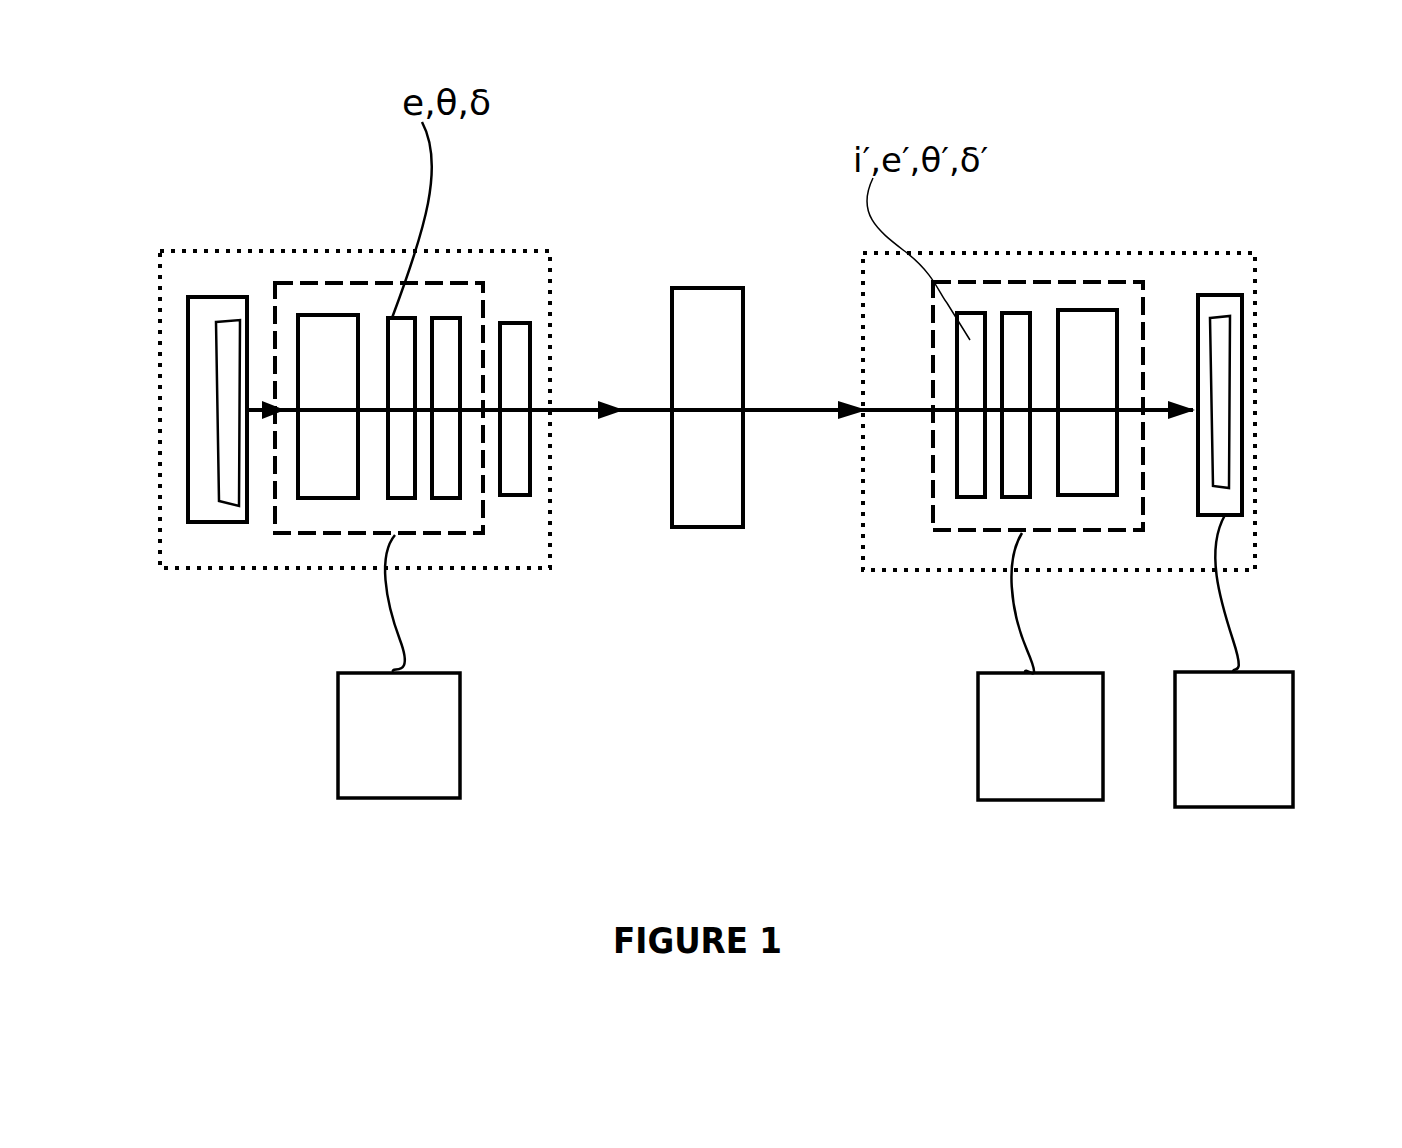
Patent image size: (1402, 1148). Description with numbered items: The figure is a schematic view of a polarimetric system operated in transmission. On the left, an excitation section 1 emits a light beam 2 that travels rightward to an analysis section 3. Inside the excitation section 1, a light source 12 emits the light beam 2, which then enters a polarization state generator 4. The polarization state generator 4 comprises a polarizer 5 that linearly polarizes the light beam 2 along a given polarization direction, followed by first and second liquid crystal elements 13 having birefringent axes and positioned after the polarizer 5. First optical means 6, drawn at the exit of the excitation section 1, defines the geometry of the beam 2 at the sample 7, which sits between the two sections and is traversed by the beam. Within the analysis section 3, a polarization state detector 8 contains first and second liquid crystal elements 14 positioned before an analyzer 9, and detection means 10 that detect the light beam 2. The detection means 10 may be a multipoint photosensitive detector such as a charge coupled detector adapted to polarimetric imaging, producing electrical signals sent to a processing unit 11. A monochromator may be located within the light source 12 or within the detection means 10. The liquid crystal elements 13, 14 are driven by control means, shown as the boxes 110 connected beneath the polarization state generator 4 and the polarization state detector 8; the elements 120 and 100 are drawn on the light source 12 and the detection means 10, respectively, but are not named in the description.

The excitation section 1 is at (222, 250).
The light beam 2 is at (564, 409).
The analysis section 3 is at (1157, 253).
The polarization state generator 4 is at (320, 533).
The polarizer 5 is at (325, 316).
The first optical means 6 is at (512, 323).
The sample 7 is at (705, 288).
The polarization state detector 8 is at (995, 530).
The analyzer 9 is at (1095, 310).
The detection means 10 is at (1218, 295).
The processing unit 11 is at (1175, 807).
The light source 12 is at (215, 522).
The liquid crystal elements 13 is at (400, 318).
The liquid crystal elements 14 is at (968, 313).
The detector sensing surface 100 is at (1218, 332).
The control unit 110 is at (353, 803).
The source emitting surface 120 is at (228, 377).